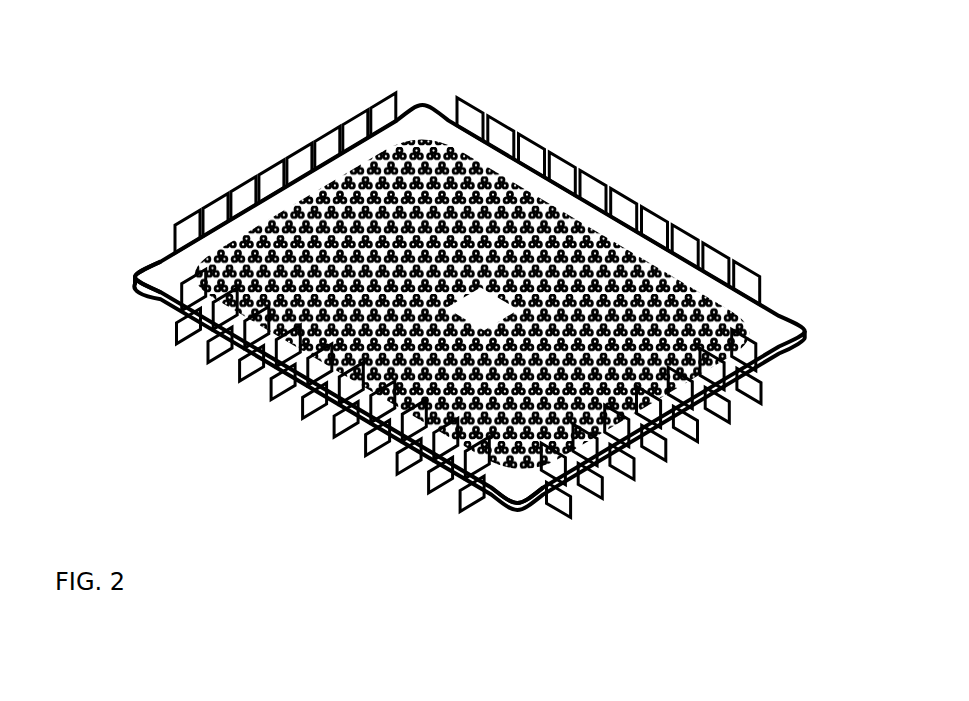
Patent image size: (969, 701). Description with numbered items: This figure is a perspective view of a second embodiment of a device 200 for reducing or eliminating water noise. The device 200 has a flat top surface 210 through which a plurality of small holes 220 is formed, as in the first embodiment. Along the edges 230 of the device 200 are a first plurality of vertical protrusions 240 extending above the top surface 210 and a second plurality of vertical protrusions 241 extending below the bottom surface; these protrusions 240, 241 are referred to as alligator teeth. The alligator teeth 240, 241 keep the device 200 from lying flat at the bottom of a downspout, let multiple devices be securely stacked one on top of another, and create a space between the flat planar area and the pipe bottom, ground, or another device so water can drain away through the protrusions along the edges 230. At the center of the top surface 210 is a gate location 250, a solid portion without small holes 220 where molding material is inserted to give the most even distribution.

The device 200 is at (100, 105).
The top surface 210 is at (780, 330).
The small holes 220 is at (412, 118).
The edges 230 is at (135, 284).
The first plurality of vertical protrusions 240 is at (231, 190).
The second plurality of vertical protrusions 241 is at (217, 363).
The gate location 250 is at (471, 306).